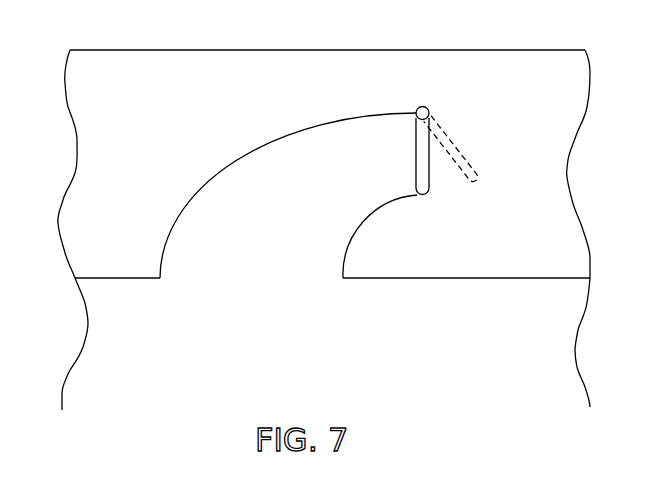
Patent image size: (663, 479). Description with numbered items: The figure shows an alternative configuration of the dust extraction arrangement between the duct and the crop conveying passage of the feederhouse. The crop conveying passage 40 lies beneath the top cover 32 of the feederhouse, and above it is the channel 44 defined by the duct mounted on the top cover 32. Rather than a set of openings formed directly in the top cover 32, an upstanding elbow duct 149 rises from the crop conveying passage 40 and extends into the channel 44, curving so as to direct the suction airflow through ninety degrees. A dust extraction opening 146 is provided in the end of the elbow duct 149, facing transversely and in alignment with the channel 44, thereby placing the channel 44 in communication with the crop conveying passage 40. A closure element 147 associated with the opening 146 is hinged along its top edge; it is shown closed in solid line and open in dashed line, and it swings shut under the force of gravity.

The channel 44 is at (188, 120).
The crop conveying passage 40 is at (168, 368).
The elbow duct 149 is at (288, 132).
The top cover 32 is at (525, 278).
The closure element 147 is at (429, 195).
The dust extraction opening 146 is at (404, 148).